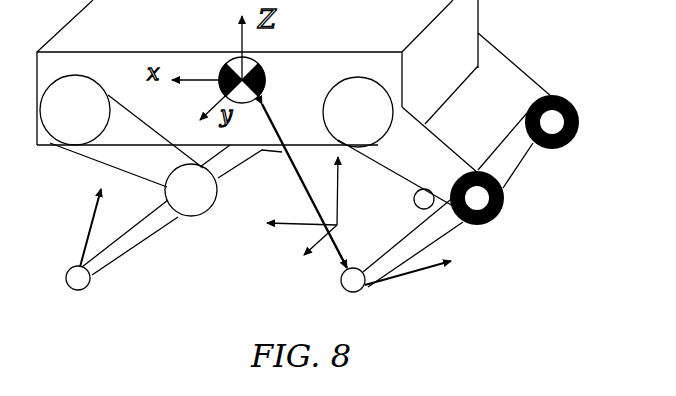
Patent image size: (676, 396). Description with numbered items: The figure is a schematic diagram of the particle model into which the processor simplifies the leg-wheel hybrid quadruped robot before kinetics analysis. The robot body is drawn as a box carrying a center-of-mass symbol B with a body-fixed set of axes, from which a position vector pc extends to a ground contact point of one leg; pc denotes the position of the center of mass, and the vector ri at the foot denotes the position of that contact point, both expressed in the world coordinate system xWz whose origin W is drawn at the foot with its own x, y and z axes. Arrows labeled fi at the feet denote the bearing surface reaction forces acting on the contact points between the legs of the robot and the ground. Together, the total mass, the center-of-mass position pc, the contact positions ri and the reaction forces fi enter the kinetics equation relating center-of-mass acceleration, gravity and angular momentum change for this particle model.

The body frame origin / center of mass B is at (253, 80).
The position of a center of mass pc is at (304, 184).
The bearing surface reaction force of the contact points fi is at (262, 247).
The world coordinate system W is at (312, 216).
The positions of contact points ri is at (361, 230).